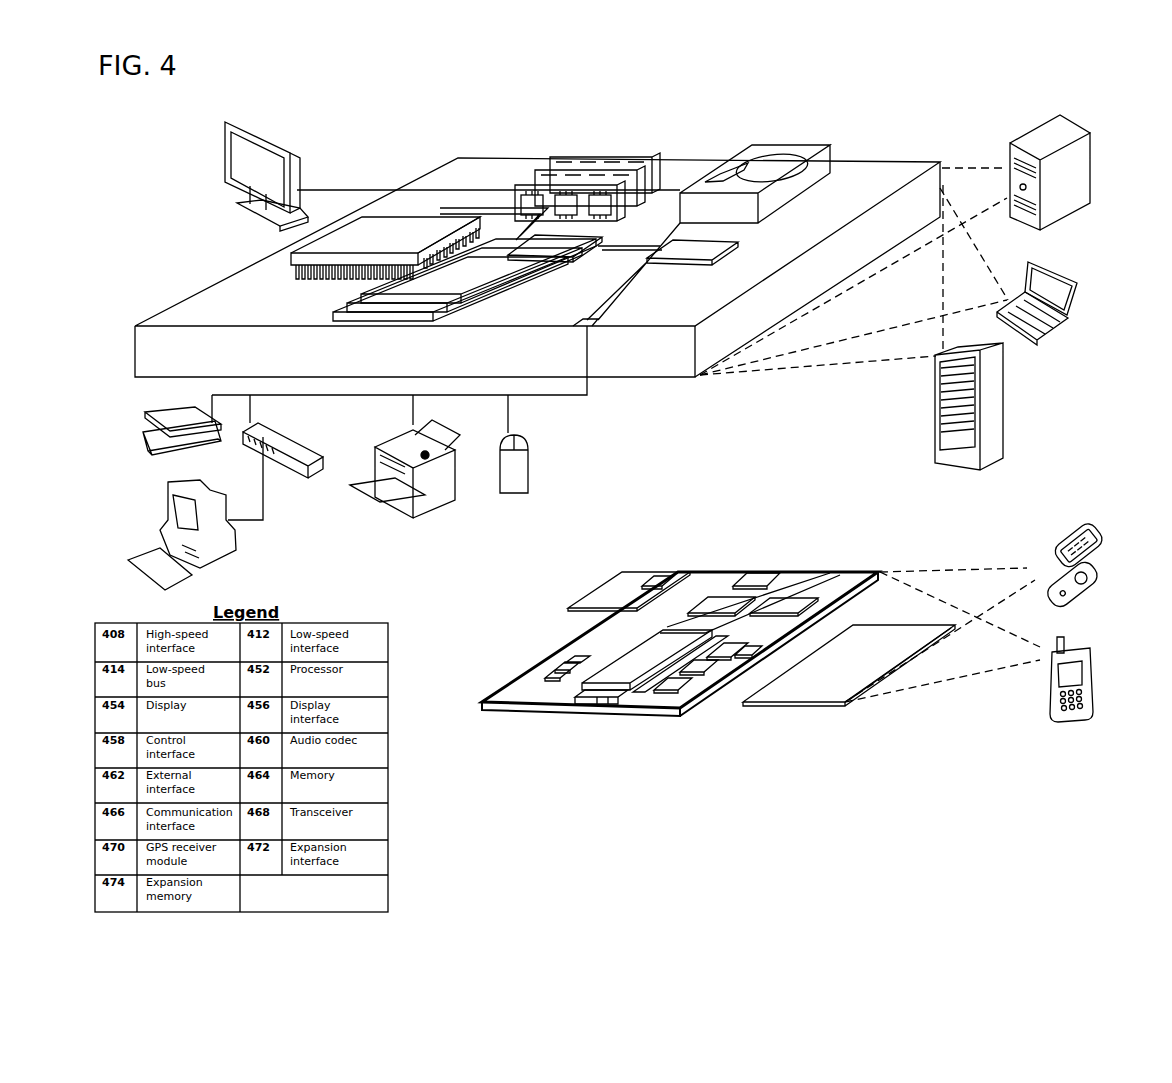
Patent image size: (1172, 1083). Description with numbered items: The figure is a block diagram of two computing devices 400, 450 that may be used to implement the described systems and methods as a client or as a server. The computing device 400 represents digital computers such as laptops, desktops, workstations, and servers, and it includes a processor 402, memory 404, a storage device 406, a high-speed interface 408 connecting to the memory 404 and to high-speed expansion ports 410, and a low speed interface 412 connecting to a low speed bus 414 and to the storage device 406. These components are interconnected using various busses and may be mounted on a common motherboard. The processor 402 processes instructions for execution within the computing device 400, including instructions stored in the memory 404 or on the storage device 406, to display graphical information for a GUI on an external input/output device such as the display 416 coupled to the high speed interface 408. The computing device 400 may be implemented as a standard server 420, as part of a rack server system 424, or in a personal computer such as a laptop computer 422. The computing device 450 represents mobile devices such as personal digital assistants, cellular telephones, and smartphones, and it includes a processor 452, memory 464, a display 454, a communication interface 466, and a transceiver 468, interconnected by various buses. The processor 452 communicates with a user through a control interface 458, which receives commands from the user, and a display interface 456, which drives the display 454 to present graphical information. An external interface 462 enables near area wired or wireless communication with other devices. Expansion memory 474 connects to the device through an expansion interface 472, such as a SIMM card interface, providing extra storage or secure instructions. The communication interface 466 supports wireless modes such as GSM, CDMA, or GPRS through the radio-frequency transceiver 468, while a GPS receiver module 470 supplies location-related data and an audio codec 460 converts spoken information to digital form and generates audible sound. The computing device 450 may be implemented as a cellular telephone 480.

The computing device 400 is at (396, 139).
The processor 402 is at (290, 262).
The memory 404 is at (555, 156).
The storage device 406 is at (751, 151).
The high-speed interface 408 is at (537, 243).
The high-speed expansion ports 410 is at (372, 297).
The low speed interface 412 is at (696, 248).
The low speed bus 414 is at (597, 328).
The display 416 is at (226, 128).
The standard server 420 is at (1007, 150).
The laptop computer 422 is at (1038, 262).
The rack server system 424 is at (935, 433).
The computing device 450 is at (661, 553).
The processor 452 is at (617, 708).
The display 454 is at (847, 704).
The display interface 456 is at (692, 692).
The control interface 458 is at (712, 686).
The audio codec 460 is at (746, 658).
The external interface 462 is at (597, 705).
The memory 464 is at (558, 668).
The communication interface 466 is at (720, 605).
The transceiver 468 is at (776, 603).
The GPS receiver module 470 is at (760, 583).
The expansion interface 472 is at (656, 576).
The expansion memory 474 is at (585, 583).
The cellular telephone 480 is at (1073, 526).